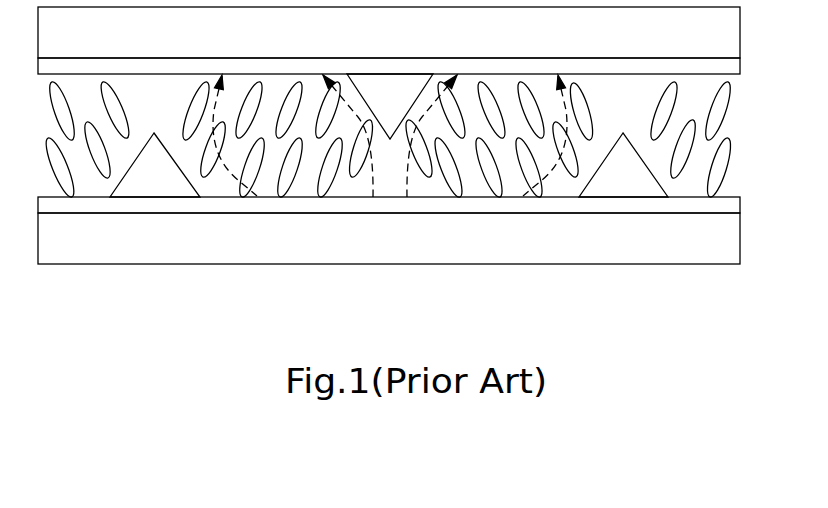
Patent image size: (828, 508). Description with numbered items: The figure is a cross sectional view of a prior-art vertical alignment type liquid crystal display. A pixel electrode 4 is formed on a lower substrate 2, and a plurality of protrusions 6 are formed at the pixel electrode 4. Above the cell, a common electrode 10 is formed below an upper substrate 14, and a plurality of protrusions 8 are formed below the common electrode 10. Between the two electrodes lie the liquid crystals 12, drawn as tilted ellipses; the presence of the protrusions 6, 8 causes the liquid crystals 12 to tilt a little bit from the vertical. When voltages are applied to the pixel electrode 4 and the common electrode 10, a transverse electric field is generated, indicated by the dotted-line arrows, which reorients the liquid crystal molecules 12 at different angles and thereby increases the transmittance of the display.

The upper substrate 14 is at (426, 44).
The common electrode 10 is at (718, 73).
The liquid crystals 12 is at (720, 110).
The protrusions 8 is at (383, 102).
The protrusions 6 is at (151, 177).
The pixel electrode 4 is at (718, 212).
The lower substrate 2 is at (408, 247).